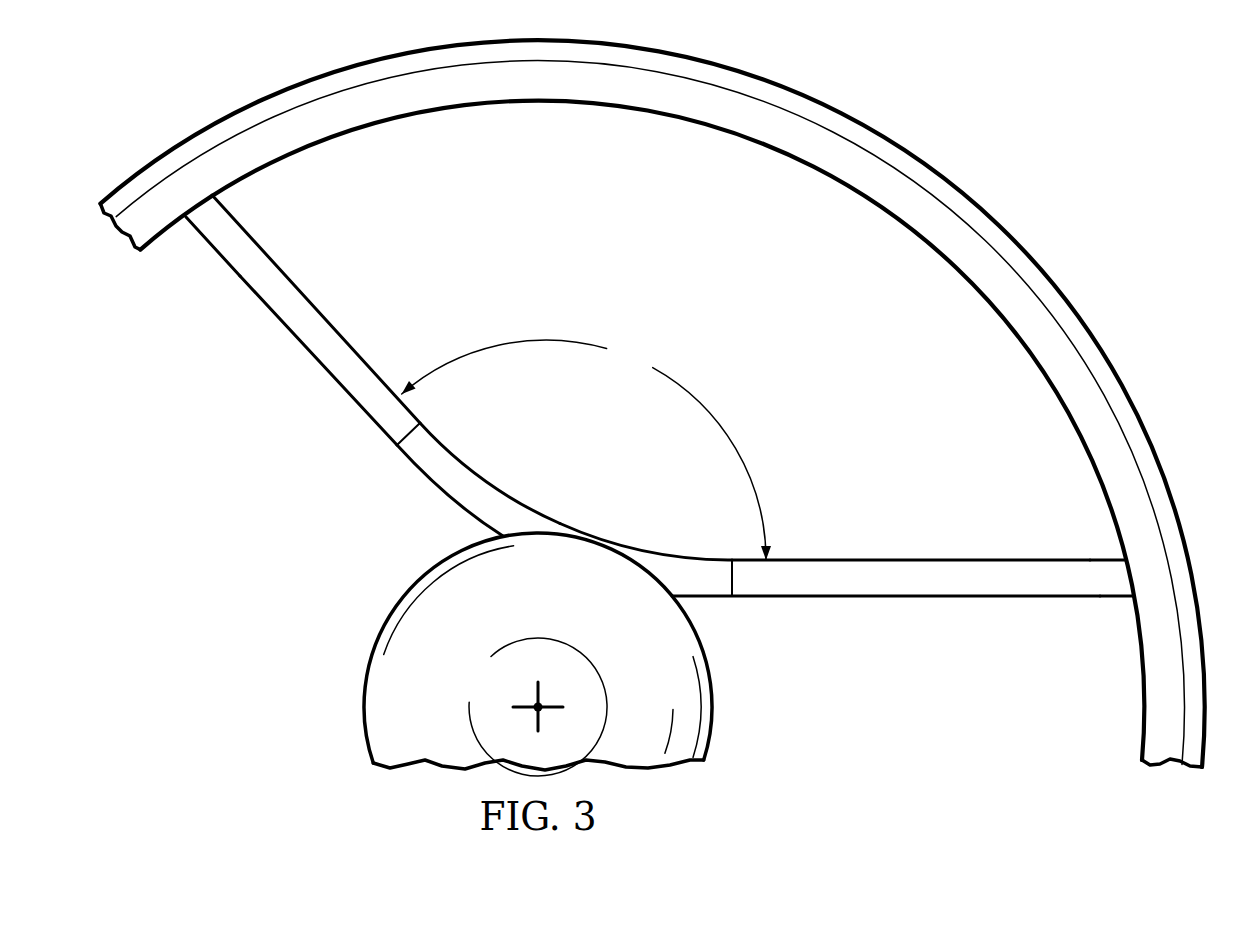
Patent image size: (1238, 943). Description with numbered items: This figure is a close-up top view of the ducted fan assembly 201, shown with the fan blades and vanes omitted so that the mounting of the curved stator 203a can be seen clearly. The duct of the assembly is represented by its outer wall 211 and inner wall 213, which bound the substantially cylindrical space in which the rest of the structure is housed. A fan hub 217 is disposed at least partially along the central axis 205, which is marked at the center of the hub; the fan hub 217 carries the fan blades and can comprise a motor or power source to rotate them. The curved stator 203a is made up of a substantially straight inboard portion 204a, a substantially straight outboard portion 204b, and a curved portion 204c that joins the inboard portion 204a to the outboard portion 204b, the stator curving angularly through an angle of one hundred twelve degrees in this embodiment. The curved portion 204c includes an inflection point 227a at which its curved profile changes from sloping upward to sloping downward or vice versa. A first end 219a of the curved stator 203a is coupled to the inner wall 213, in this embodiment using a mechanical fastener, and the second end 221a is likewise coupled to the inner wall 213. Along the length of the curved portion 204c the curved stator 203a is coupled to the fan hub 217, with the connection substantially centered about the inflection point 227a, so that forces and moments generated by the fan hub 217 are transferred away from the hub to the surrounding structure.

The ducted fan assembly 201 is at (652, 408).
The outer wall 211 is at (852, 117).
The inner wall 213 is at (773, 148).
The first end 219a is at (185, 223).
The outboard portion 204b is at (316, 307).
The curved portion 204c is at (507, 494).
The inflection point 227a is at (592, 535).
The curved stator 203a is at (887, 560).
The inboard portion 204a is at (962, 598).
The second end 221a is at (1118, 598).
The fan hub 217 is at (364, 700).
The central axis 205 is at (533, 702).